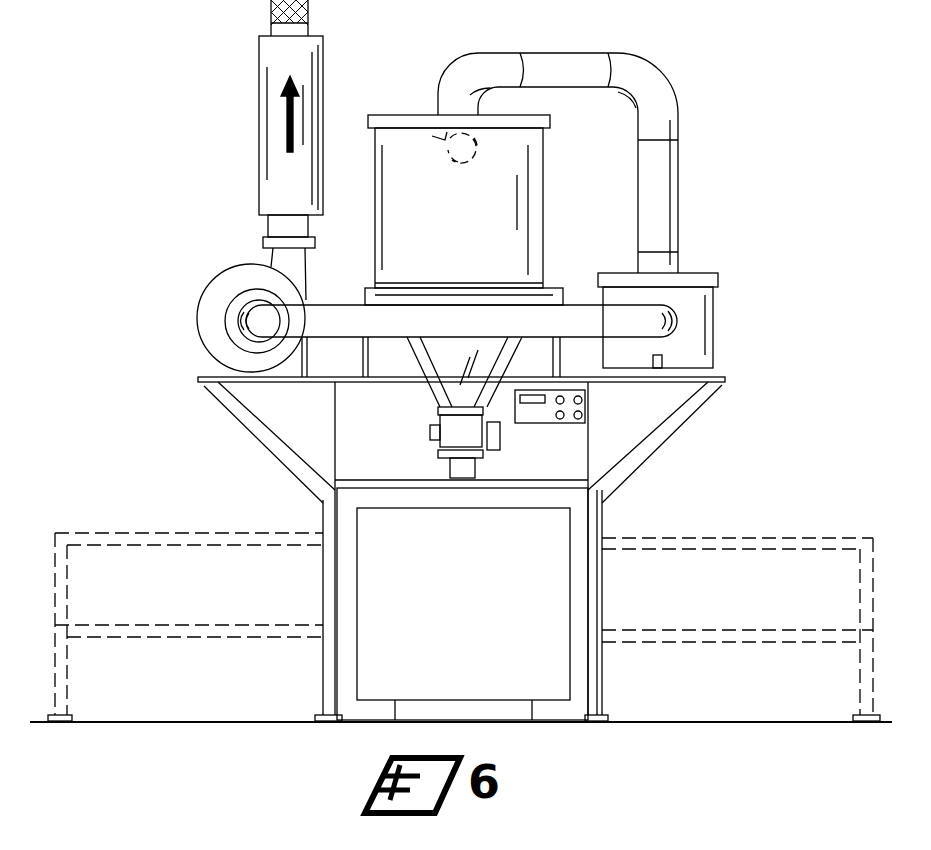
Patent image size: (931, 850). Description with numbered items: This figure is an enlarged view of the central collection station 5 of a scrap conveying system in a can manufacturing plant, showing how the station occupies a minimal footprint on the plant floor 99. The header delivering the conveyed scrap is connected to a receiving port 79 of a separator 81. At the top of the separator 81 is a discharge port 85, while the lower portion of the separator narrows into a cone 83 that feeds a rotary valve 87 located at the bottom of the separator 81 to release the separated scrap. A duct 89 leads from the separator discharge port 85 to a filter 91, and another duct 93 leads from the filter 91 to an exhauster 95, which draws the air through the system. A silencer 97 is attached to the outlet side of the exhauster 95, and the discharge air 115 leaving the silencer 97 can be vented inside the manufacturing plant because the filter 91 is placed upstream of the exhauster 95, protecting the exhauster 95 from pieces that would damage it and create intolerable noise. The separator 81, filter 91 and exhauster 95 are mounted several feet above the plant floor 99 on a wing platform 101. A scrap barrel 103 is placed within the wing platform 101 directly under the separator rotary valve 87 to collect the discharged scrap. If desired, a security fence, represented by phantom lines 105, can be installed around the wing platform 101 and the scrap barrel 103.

The central collection station 5 is at (610, 512).
The receiving port 79 is at (413, 117).
The separator 81 is at (528, 158).
The discharge cone 83 is at (447, 388).
The discharge port 85 is at (448, 88).
The rotary valve 87 is at (445, 435).
The duct 89 is at (660, 205).
The filter 91 is at (700, 328).
The duct 93 is at (574, 314).
The exhauster 95 is at (216, 290).
The silencer 97 is at (268, 192).
The floor 99 is at (730, 722).
The wing platform 101 is at (318, 516).
The scrap barrel 103 is at (480, 552).
The security fence 105 is at (136, 533).
The discharge air 115 is at (290, 122).